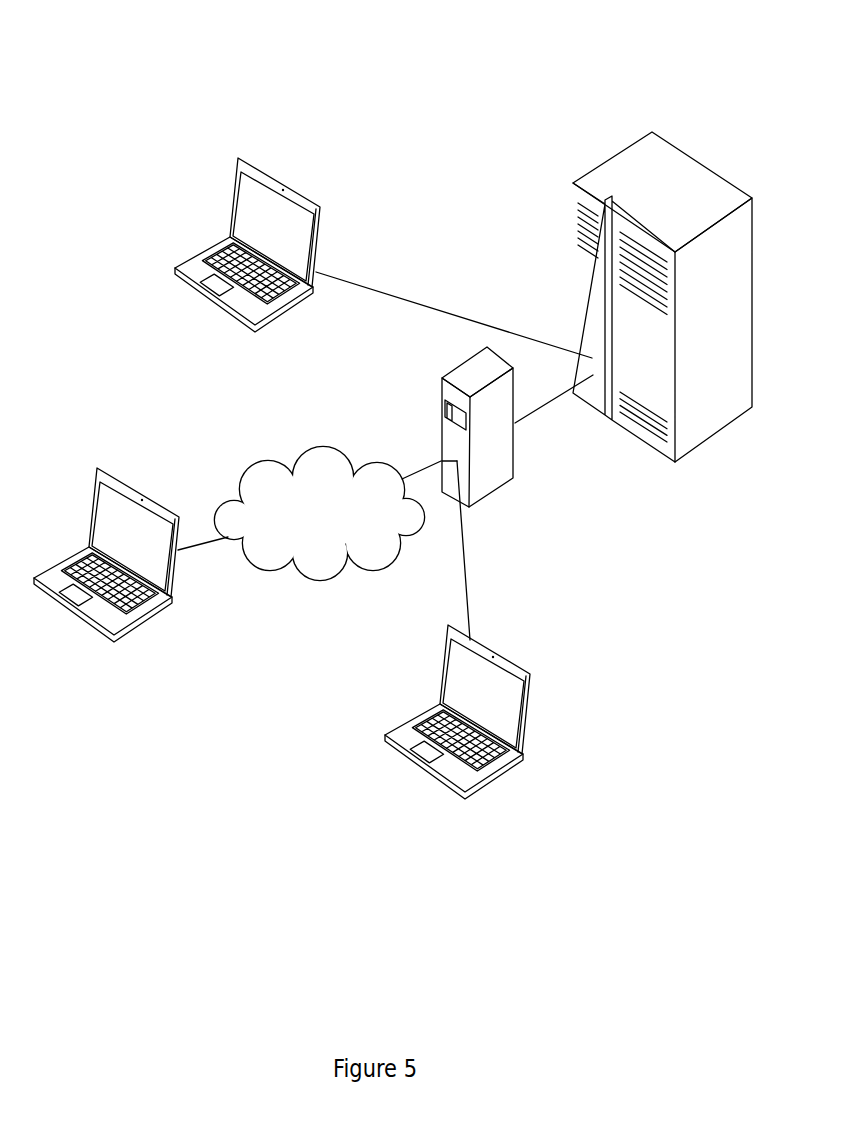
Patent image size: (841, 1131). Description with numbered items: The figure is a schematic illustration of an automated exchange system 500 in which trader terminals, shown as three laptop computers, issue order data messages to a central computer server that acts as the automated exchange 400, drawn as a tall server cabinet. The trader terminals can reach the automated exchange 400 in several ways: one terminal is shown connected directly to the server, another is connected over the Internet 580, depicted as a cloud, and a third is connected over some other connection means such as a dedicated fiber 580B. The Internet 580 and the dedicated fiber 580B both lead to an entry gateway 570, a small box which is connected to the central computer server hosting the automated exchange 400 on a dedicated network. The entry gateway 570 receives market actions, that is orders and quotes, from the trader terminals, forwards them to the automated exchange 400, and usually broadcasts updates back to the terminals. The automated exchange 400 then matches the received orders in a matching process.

The automated exchange system 500 is at (158, 69).
The automated exchange 400 is at (549, 232).
The entry gateway 570 is at (424, 429).
The Internet 580 is at (221, 454).
The dedicated fiber 580B is at (489, 596).